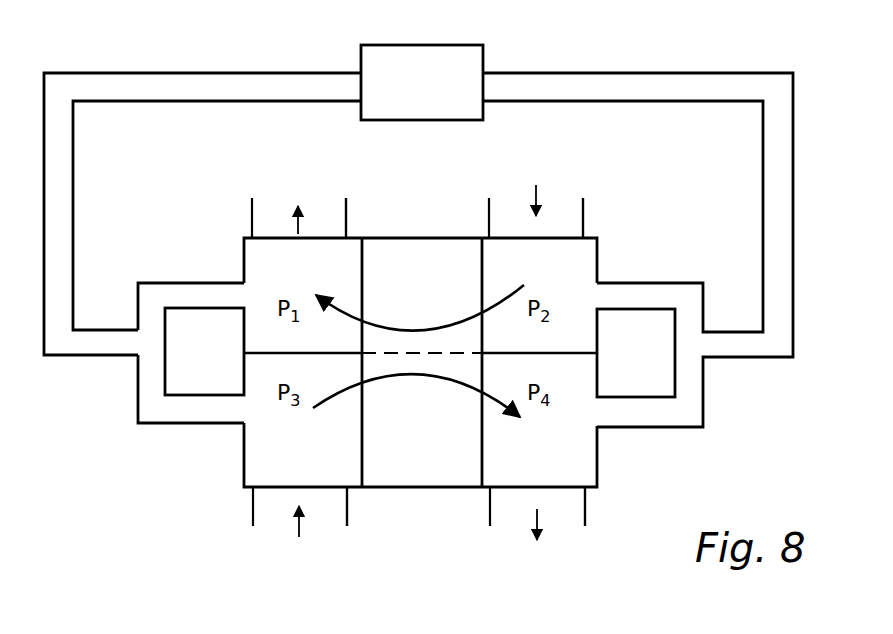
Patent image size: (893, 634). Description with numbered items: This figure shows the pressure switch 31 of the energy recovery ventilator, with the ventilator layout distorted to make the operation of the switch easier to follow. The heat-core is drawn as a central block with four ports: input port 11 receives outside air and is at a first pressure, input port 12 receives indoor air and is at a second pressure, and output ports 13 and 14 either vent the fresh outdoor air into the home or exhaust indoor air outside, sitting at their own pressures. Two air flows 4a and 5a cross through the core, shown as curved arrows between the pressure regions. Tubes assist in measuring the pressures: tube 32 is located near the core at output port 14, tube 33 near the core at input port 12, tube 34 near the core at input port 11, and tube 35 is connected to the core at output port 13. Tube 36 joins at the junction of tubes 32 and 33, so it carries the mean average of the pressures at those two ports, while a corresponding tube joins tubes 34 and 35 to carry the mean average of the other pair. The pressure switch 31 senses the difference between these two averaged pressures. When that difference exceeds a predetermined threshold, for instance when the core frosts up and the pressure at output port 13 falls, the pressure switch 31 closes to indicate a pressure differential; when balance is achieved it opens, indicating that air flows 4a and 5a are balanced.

The input port 11 is at (562, 205).
The input port 12 is at (325, 523).
The output port 13 is at (563, 523).
The output port 14 is at (318, 208).
The pressure switch 31 is at (457, 45).
The tube 32 is at (160, 281).
The tube 33 is at (160, 425).
The tube 34 is at (793, 211).
The tube 35 is at (627, 395).
The tube 36 is at (73, 220).
The air flow 4a is at (420, 308).
The air flow 5a is at (416, 395).